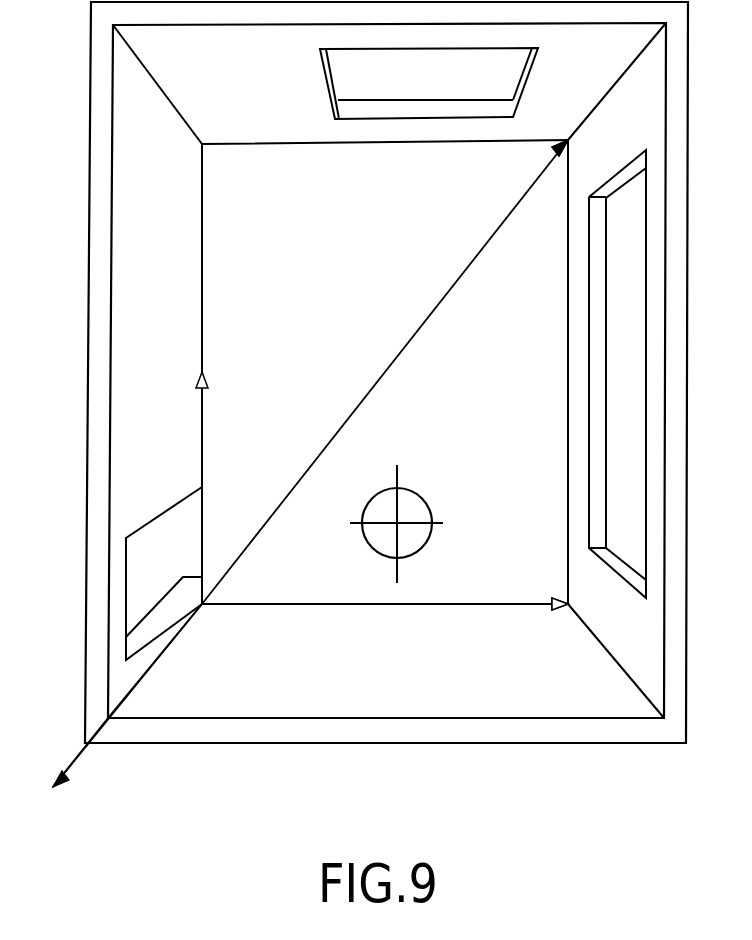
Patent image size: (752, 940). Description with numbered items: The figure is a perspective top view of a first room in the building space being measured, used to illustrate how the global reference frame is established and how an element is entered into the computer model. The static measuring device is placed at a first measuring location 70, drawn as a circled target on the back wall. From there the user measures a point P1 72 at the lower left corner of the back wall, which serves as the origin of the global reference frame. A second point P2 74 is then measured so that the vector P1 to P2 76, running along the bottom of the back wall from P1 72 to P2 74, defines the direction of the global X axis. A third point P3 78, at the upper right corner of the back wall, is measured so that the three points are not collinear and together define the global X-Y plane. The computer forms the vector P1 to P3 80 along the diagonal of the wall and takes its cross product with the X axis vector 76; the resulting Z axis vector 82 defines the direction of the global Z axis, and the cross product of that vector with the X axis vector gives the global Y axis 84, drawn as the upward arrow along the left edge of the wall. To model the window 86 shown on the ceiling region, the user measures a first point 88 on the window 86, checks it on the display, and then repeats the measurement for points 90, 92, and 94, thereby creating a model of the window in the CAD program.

The first measuring location 70 is at (408, 489).
The point P1 72 is at (213, 595).
The point P2 74 is at (557, 597).
The vector P1 to P2 76 is at (490, 603).
The point P3 78 is at (553, 147).
The vector P1 to P3 80 is at (440, 304).
The Z axis vector 82 is at (143, 672).
The global Y axis 84 is at (202, 420).
The window 86 is at (429, 83).
The first point on the window 88 is at (333, 122).
The second window point 90 is at (321, 50).
The third window point 92 is at (540, 49).
The fourth window point 94 is at (513, 120).